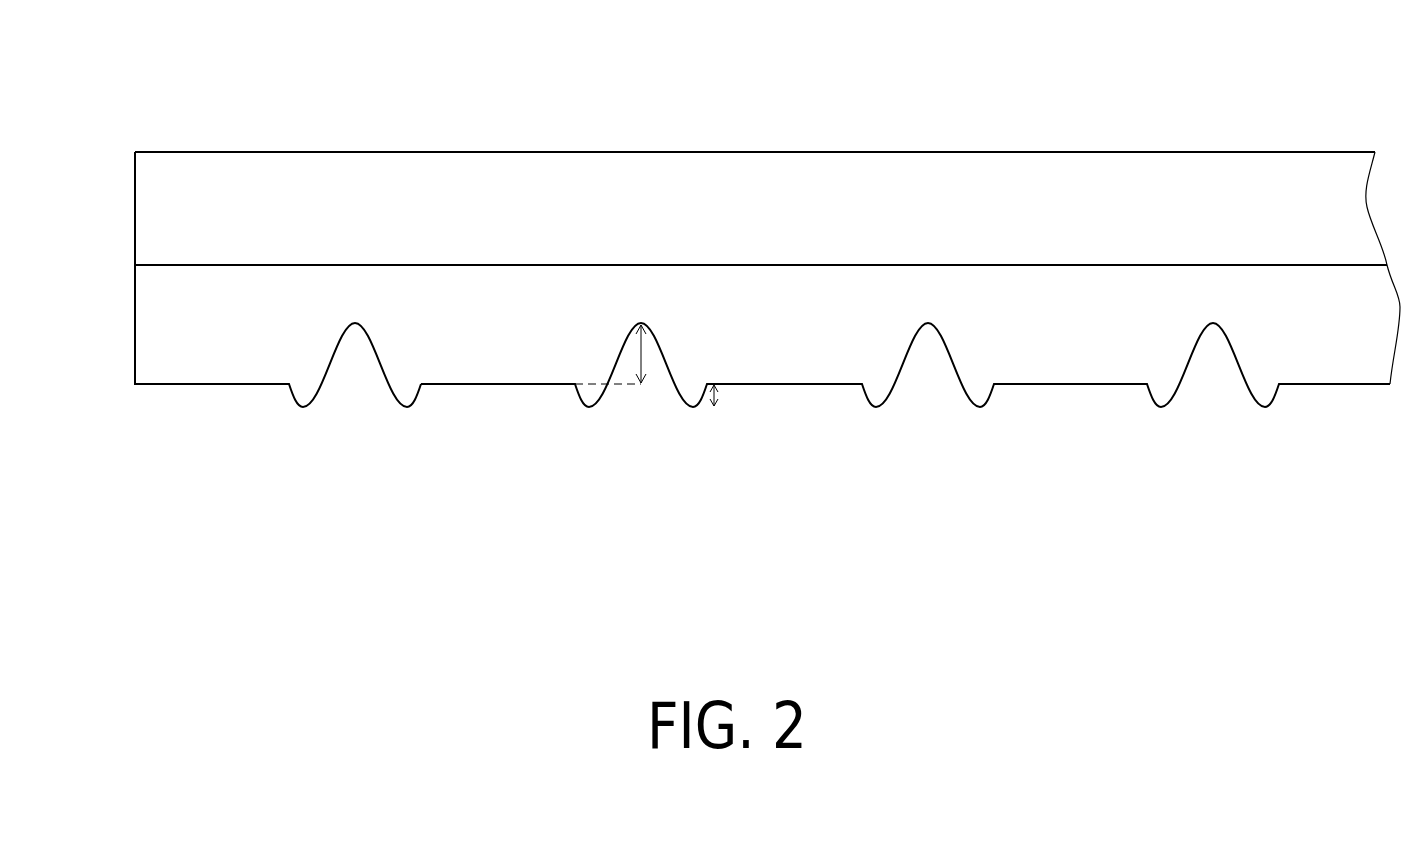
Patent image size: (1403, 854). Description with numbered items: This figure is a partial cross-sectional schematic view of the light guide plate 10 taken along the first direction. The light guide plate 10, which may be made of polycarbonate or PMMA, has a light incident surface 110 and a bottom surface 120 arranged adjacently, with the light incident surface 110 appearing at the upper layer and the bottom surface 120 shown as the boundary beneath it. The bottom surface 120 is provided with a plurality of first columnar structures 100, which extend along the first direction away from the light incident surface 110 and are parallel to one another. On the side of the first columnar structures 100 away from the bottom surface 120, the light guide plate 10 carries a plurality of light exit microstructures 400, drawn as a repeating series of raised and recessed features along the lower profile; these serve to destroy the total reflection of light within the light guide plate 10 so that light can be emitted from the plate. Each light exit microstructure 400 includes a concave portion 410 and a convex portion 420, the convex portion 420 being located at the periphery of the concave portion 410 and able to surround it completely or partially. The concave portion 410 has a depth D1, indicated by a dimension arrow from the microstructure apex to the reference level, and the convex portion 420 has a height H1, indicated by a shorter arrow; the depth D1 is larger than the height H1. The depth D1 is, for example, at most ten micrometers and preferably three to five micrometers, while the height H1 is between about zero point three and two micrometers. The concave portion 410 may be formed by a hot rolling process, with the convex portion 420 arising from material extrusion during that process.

The light guide plate 10 is at (125, 75).
The light incident surface 110 is at (133, 207).
The bottom surface 120 is at (179, 267).
The first columnar structure 100 is at (170, 338).
The light exit microstructure 400 is at (370, 421).
The concave portion 410 is at (352, 383).
The convex portion 420 is at (412, 428).
The depth D1 is at (643, 358).
The height H1 is at (718, 397).